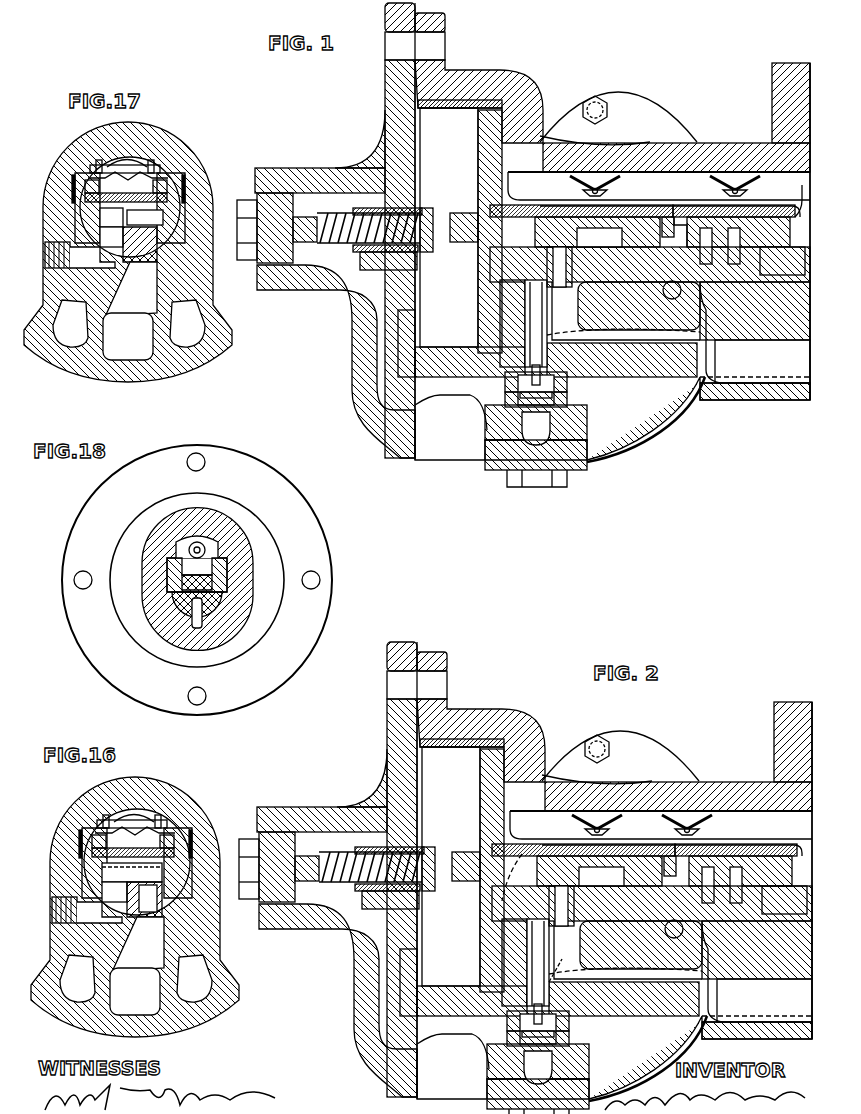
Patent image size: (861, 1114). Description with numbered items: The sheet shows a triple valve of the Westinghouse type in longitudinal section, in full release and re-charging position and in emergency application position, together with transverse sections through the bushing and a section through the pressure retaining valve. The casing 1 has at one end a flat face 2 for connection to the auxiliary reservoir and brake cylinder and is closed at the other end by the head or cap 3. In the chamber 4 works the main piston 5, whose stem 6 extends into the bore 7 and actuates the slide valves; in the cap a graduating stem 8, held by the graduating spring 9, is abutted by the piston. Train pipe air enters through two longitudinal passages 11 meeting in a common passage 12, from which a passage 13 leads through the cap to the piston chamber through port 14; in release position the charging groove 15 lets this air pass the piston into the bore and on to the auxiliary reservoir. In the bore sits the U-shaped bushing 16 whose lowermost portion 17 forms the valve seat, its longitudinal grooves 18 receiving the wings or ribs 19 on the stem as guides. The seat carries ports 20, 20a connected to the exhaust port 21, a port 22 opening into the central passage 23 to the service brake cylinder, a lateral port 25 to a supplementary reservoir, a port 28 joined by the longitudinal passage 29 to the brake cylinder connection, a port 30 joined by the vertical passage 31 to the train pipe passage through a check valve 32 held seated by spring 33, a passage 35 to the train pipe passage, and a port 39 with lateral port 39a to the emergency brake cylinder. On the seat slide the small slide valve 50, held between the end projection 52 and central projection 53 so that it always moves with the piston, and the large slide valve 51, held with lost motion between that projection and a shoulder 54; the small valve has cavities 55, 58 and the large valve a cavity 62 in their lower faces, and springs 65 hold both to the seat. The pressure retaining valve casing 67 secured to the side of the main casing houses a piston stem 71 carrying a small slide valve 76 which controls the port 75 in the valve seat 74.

In FIG. 1, the casing 1 is at (664, 148).
In FIG. 2, the casing 1 is at (614, 731).
In FIG. 17, the casing 1 is at (80, 146).
In FIG. 16, the casing 1 is at (135, 904).
In FIG. 1, the flat face 2 is at (806, 66).
In FIG. 2, the flat face 2 is at (793, 859).
In FIG. 1, the head or cap 3 is at (400, 115).
In FIG. 2, the head or cap 3 is at (352, 870).
In FIG. 1, the chamber 4 is at (449, 227).
In FIG. 2, the chamber 4 is at (451, 866).
In FIG. 1, the main piston 5 is at (478, 136).
In FIG. 2, the main piston 5 is at (478, 870).
In FIG. 1, the stem 6 is at (650, 204).
In FIG. 2, the stem 6 is at (647, 834).
In FIG. 17, the stem 6 is at (145, 160).
In FIG. 16, the stem 6 is at (133, 814).
In FIG. 1, the bore 7 is at (659, 186).
In FIG. 2, the bore 7 is at (661, 825).
In FIG. 1, the graduating stem 8 is at (430, 208).
In FIG. 2, the graduating stem 8 is at (410, 833).
In FIG. 1, the graduating spring 9 is at (343, 220).
In FIG. 2, the graduating spring 9 is at (337, 843).
In FIG. 17, the passages 11 is at (129, 323).
In FIG. 16, the passages 11 is at (136, 978).
In FIG. 1, the common passage 12 is at (612, 354).
In FIG. 2, the common passage 12 is at (614, 993).
In FIG. 1, the passage 13 is at (336, 361).
In FIG. 2, the passage 13 is at (338, 1000).
In FIG. 1, the port 14 is at (400, 290).
In FIG. 2, the port 14 is at (390, 913).
In FIG. 1, the charging groove 15 is at (480, 112).
In FIG. 2, the charging groove 15 is at (462, 754).
In FIG. 1, the bushing 16 is at (702, 458).
In FIG. 17, the bushing 16 is at (180, 205).
In FIG. 1, the valve seat 17 is at (737, 497).
In FIG. 17, the valve seat 17 is at (140, 244).
In FIG. 17, the longitudinal grooves 18 is at (82, 191).
In FIG. 16, the longitudinal grooves 18 is at (125, 823).
In FIG. 17, the wings or ribs 19 is at (86, 160).
In FIG. 16, the wings or ribs 19 is at (125, 832).
In FIG. 2, the port 20 is at (754, 885).
In FIG. 16, the port 20 is at (114, 892).
In FIG. 2, the port 20a is at (773, 886).
In FIG. 2, the lateral port 21 is at (712, 971).
In FIG. 16, the lateral port 21 is at (87, 910).
In FIG. 16, the port 22 is at (144, 899).
In FIG. 1, the central passage 23 is at (755, 361).
In FIG. 2, the central passage 23 is at (757, 1000).
In FIG. 17, the central passage 23 is at (128, 336).
In FIG. 16, the central passage 23 is at (135, 991).
In FIG. 1, the lateral port 25 is at (700, 340).
In FIG. 1, the port 28 is at (562, 272).
In FIG. 2, the port 28 is at (565, 914).
In FIG. 1, the longitudinal passage 29 is at (690, 337).
In FIG. 2, the longitudinal passage 29 is at (625, 955).
In FIG. 17, the longitudinal passage 29 is at (131, 320).
In FIG. 16, the longitudinal passage 29 is at (138, 954).
In FIG. 1, the port 30 is at (523, 323).
In FIG. 2, the port 30 is at (525, 962).
In FIG. 1, the vertical passage 31 is at (538, 324).
In FIG. 2, the vertical passage 31 is at (540, 963).
In FIG. 1, the check valve 32 is at (558, 410).
In FIG. 2, the check valve 32 is at (544, 1072).
In FIG. 1, the spring 33 is at (545, 384).
In FIG. 2, the spring 33 is at (554, 1024).
In FIG. 2, the passage 35 is at (565, 969).
In FIG. 2, the port 39 is at (784, 903).
In FIG. 17, the port 39 is at (111, 237).
In FIG. 1, the lateral port 39a is at (803, 255).
In FIG. 17, the lateral port 39a is at (80, 255).
In FIG. 1, the small slide valve 50 is at (738, 240).
In FIG. 16, the small slide valve 50 is at (106, 862).
In FIG. 1, the large slide valve 51 is at (597, 232).
In FIG. 2, the large slide valve 51 is at (582, 871).
In FIG. 1, the end projection 52 is at (802, 198).
In FIG. 1, the central projection 53 is at (681, 210).
In FIG. 2, the shoulder 54 is at (497, 880).
In FIG. 2, the cavity 55 is at (740, 871).
In FIG. 17, the cavity 55 is at (131, 217).
In FIG. 2, the cavity 58 is at (721, 861).
In FIG. 16, the cavity 58 is at (132, 872).
In FIG. 1, the cavity 62 is at (612, 238).
In FIG. 2, the cavity 62 is at (581, 874).
In FIG. 1, the springs 65 is at (582, 177).
In FIG. 2, the springs 65 is at (642, 825).
In FIG. 17, the springs 65 is at (115, 135).
In FIG. 16, the springs 65 is at (135, 798).
In FIG. 1, the pressure retaining valve casing 67 is at (582, 100).
In FIG. 18, the pressure retaining valve casing 67 is at (252, 464).
In FIG. 18, the stem 71 is at (167, 578).
In FIG. 18, the valve seat 74 is at (222, 586).
In FIG. 18, the port 75 is at (202, 601).
In FIG. 18, the small slide valve 76 is at (232, 572).